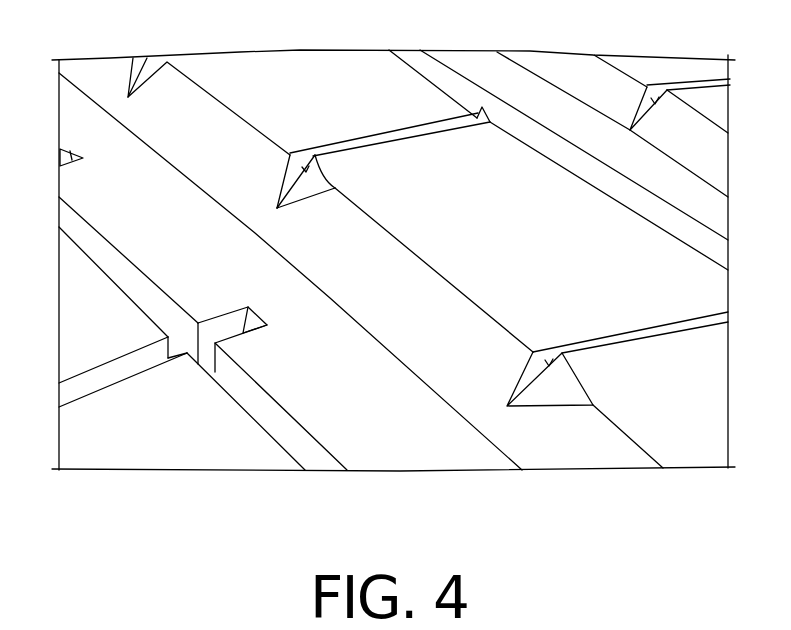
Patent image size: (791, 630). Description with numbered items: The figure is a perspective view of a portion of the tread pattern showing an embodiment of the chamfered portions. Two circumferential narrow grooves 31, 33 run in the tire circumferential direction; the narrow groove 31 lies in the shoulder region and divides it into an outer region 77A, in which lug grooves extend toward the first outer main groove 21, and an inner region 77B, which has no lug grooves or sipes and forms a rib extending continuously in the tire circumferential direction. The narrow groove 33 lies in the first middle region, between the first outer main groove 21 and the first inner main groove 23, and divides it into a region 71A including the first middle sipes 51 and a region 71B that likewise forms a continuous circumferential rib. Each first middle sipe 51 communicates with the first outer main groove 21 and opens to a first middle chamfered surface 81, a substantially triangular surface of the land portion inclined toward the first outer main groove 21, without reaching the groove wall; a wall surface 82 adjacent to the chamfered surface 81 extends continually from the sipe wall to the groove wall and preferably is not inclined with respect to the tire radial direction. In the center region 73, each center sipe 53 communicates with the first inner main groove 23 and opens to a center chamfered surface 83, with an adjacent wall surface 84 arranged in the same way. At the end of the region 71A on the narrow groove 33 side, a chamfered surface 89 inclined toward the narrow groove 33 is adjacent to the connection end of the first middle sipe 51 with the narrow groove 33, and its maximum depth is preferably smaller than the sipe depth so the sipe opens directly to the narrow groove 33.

The first outer main groove 21 is at (555, 458).
The first inner main groove 23 is at (720, 162).
The narrow groove 31 is at (310, 467).
The narrow groove 33 is at (718, 258).
The first middle sipe 51 is at (383, 137).
The center sipe 53 is at (713, 80).
The region including the first middle sipes 71A is at (358, 68).
The region between the narrow groove and the first inner main groove 71B is at (477, 60).
The center region 73 is at (685, 67).
The outer region 77A is at (78, 360).
The inner region 77B is at (80, 200).
The first middle chamfered surface 81 is at (300, 190).
The wall surface 82 is at (298, 153).
The center chamfered surface 83 is at (668, 112).
The wall surface 84 is at (645, 83).
The chamfered surface 89 is at (490, 122).